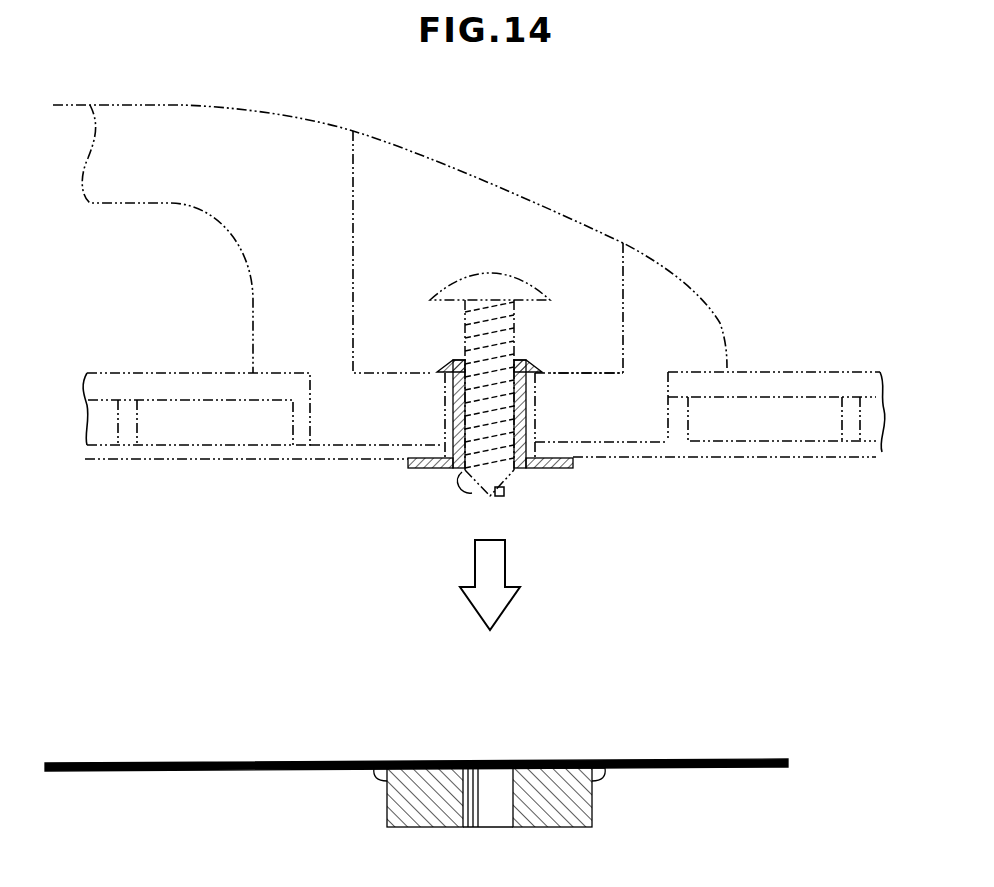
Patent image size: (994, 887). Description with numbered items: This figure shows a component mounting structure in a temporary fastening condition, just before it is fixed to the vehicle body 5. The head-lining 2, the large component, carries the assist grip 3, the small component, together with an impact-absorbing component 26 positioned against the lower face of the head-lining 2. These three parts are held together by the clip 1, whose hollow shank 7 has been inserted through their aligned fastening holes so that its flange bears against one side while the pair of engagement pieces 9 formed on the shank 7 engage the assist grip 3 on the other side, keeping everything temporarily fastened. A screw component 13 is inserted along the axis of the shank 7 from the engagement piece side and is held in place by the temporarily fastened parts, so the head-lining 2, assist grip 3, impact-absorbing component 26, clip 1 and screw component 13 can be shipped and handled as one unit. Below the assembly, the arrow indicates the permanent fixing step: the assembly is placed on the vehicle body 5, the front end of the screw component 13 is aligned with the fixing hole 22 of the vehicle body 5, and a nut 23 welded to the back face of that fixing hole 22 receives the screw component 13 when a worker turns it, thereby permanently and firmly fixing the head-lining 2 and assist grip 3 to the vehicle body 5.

The clip 1 is at (556, 470).
The head-lining 2 is at (134, 373).
The assist grip 3 is at (120, 138).
The vehicle body 5 is at (201, 762).
The shank 7 is at (453, 400).
The engagement pieces 9 is at (442, 364).
The screw component 13 is at (468, 280).
The fixing hole 22 is at (507, 786).
The nut 23 is at (418, 815).
The impact-absorbing component 26 is at (136, 459).